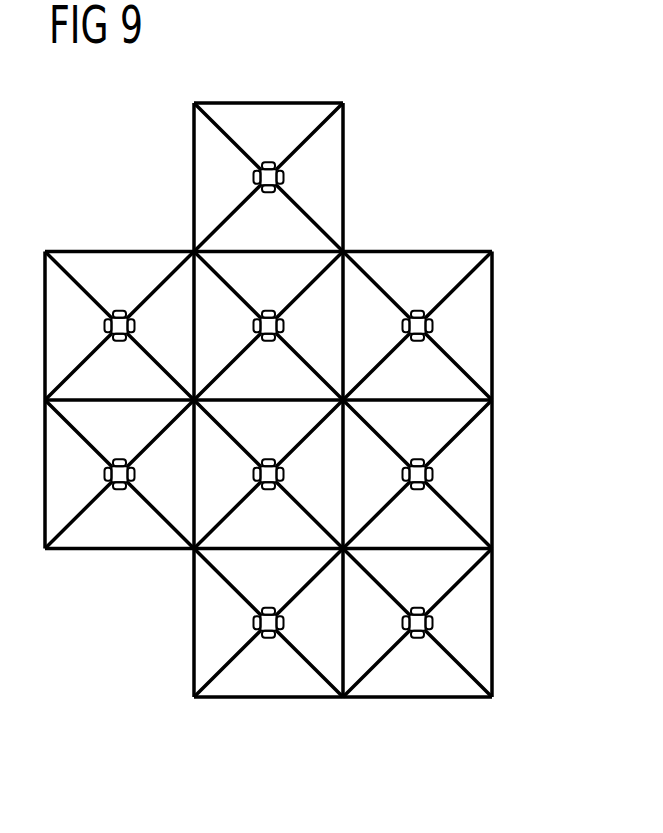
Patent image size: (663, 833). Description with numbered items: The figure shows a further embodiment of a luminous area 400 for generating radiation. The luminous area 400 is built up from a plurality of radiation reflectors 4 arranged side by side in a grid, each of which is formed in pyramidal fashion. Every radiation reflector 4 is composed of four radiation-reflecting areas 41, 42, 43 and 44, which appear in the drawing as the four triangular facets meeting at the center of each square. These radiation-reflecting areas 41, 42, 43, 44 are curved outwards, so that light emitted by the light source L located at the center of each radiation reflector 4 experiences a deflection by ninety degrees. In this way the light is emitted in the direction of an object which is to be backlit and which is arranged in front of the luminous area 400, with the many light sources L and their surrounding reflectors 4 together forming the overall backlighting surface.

The luminous area 400 is at (425, 84).
The radiation reflector 4 is at (318, 732).
The radiation-reflecting area 41 is at (233, 688).
The radiation-reflecting area 42 is at (205, 623).
The radiation-reflecting area 43 is at (278, 562).
The radiation-reflecting area 44 is at (313, 652).
The light source L is at (271, 609).